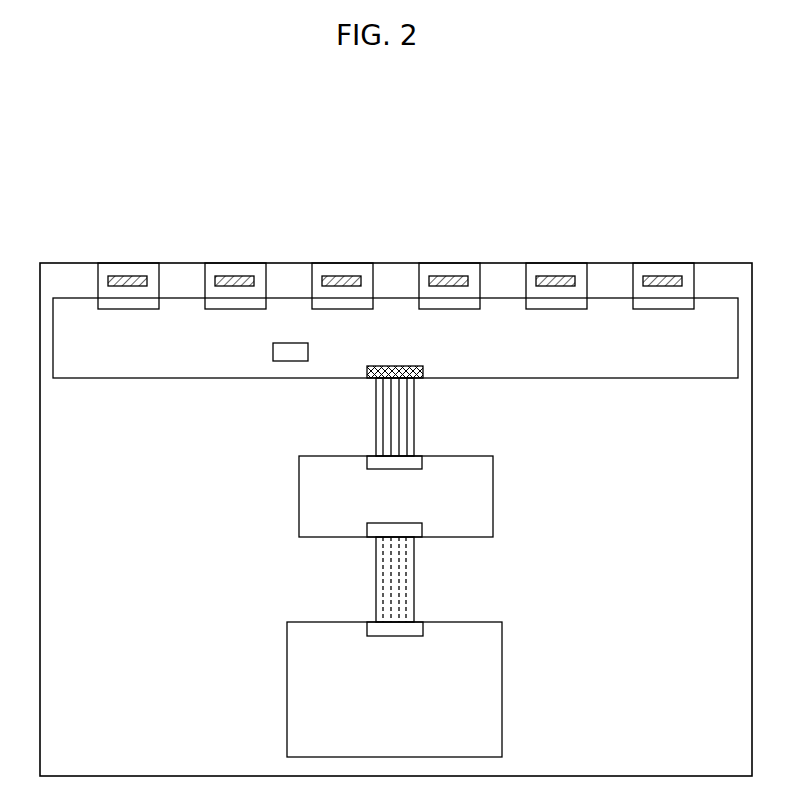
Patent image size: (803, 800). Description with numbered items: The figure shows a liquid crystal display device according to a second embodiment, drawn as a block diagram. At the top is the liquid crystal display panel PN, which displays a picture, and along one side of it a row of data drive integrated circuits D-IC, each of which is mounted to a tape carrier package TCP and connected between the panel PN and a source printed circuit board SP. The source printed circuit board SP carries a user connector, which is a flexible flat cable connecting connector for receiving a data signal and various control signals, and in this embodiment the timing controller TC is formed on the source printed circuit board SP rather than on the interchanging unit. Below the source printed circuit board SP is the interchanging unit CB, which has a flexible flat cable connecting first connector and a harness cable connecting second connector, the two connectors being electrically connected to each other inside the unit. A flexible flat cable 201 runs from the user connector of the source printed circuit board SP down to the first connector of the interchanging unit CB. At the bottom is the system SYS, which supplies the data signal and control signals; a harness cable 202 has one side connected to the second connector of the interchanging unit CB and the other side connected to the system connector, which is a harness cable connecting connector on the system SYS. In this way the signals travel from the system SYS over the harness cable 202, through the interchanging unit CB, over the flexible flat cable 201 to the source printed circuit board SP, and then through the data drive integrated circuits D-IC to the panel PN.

The liquid crystal display panel PN is at (725, 263).
The source printed circuit board SP is at (713, 380).
The tape carrier package TCP is at (98, 270).
The data drive integrated circuit D-IC is at (127, 275).
The timing controller TC is at (290, 361).
The flexible flat cable 201 is at (414, 416).
The interchanging unit CB is at (493, 496).
The harness cable 202 is at (414, 578).
The system SYS is at (502, 690).